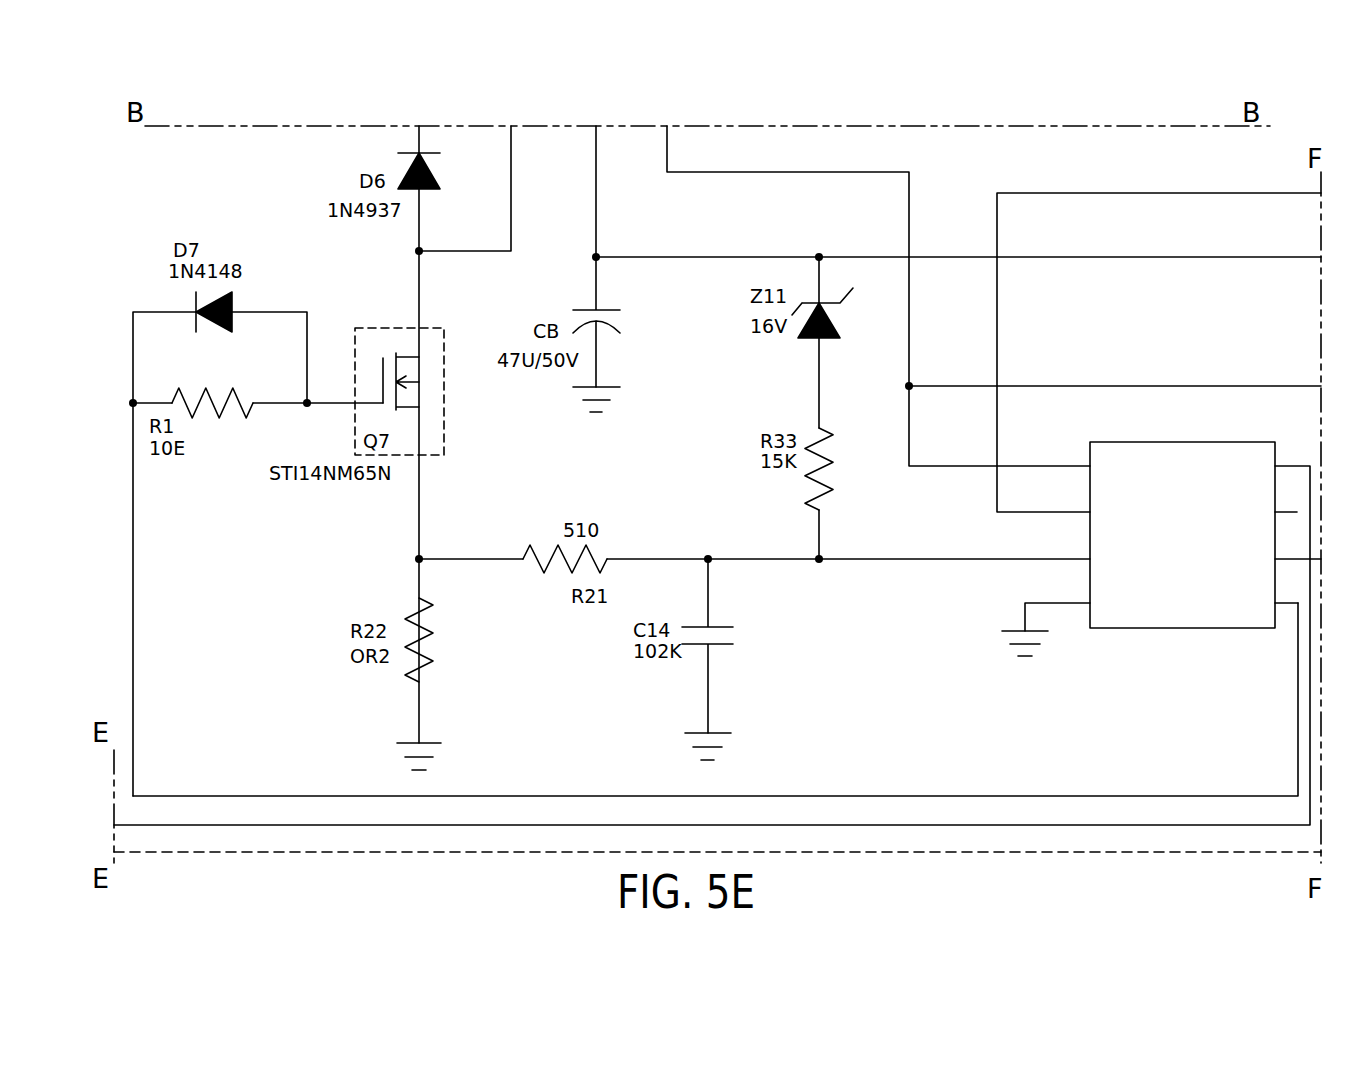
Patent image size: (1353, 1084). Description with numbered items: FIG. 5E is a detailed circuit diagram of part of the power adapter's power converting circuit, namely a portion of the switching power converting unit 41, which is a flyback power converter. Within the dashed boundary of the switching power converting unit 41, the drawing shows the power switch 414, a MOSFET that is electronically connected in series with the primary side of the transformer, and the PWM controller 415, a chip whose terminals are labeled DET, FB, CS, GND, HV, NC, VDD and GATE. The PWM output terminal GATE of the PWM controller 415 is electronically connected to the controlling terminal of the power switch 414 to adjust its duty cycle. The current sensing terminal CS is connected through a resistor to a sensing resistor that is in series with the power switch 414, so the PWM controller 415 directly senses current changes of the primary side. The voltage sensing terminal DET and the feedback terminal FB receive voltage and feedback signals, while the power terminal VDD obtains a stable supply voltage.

The power switch 414 is at (428, 328).
The PWM controller 415 is at (1167, 628).
The switching power converting unit 41 is at (915, 852).